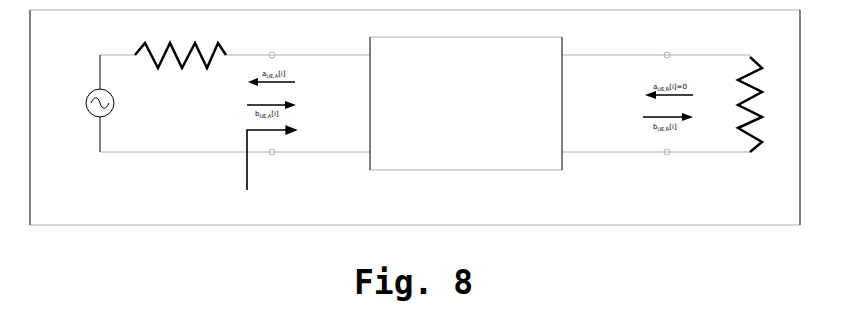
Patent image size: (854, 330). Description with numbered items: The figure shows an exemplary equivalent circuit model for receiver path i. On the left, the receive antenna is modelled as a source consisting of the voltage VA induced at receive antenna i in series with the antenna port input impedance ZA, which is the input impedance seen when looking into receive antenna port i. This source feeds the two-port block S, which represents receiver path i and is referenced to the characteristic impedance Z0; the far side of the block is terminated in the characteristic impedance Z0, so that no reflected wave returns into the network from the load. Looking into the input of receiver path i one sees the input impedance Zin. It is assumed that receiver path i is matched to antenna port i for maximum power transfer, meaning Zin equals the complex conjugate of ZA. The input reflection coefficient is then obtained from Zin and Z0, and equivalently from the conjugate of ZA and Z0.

The induced antenna voltage VA is at (80, 103).
The antenna port input impedance ZA is at (180, 42).
The receiver path scattering network S is at (466, 103).
The characteristic impedance Z0 is at (760, 103).
The receiver path input impedance Zin is at (258, 174).